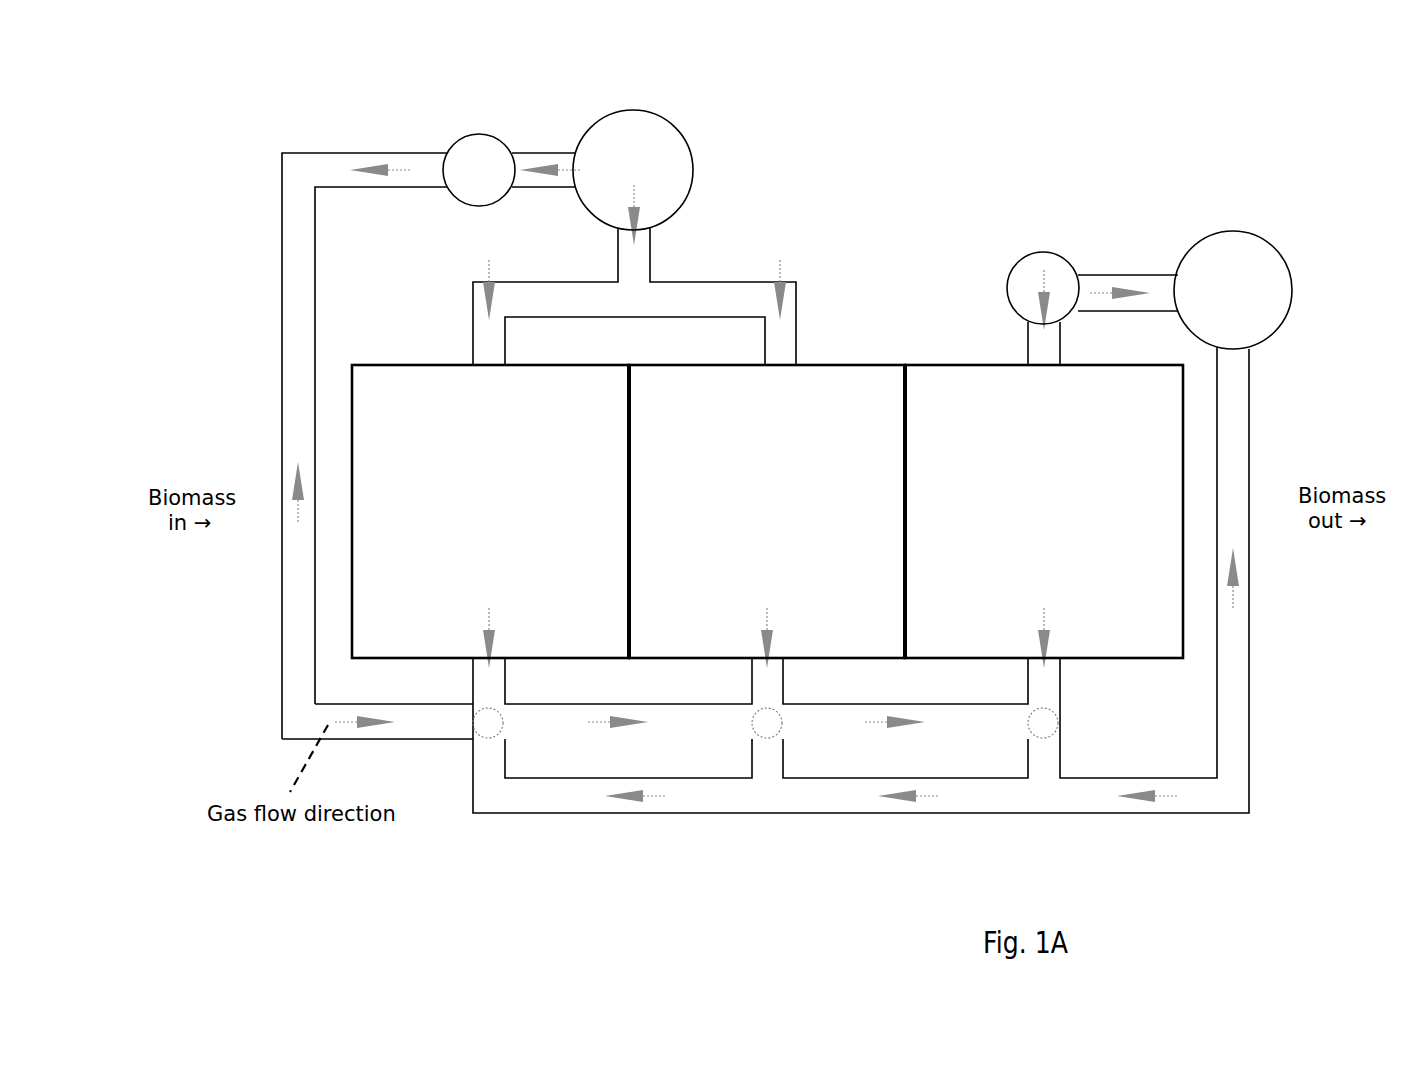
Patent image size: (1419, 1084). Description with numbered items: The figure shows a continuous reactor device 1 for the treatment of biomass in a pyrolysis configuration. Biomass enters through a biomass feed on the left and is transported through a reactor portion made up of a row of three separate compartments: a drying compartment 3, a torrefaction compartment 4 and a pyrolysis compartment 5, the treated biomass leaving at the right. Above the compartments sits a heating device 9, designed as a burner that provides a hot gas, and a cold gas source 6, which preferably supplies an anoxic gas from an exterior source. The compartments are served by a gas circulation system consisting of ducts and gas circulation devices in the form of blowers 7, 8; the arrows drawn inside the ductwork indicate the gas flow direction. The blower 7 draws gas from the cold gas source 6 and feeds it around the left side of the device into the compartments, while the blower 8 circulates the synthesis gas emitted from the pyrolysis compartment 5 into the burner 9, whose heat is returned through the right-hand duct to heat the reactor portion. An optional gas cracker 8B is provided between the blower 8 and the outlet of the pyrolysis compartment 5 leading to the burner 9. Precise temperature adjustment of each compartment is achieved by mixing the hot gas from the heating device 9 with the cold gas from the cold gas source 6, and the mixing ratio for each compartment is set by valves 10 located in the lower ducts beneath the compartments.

The continuous reactor device 1 is at (787, 472).
The drying compartment 3 is at (490, 511).
The torrefaction compartment 4 is at (767, 511).
The pyrolysis compartment 5 is at (1044, 511).
The cold gas source 6 is at (632, 152).
The blower 7 is at (478, 152).
The blower 8 is at (1047, 285).
The gas cracker 8B is at (1022, 348).
The heating device 9 is at (1245, 268).
The valves 10 is at (1045, 748).